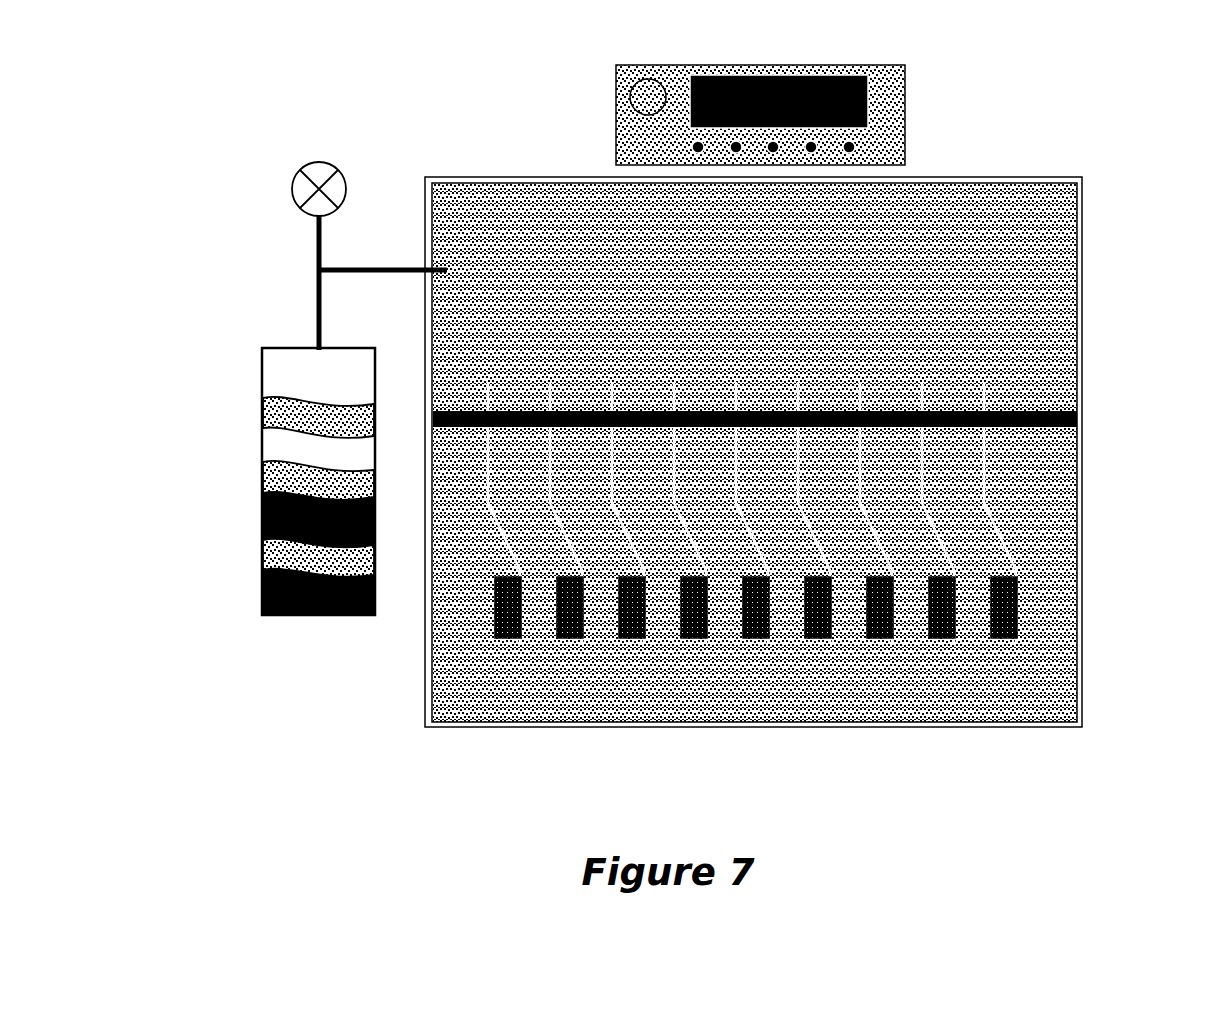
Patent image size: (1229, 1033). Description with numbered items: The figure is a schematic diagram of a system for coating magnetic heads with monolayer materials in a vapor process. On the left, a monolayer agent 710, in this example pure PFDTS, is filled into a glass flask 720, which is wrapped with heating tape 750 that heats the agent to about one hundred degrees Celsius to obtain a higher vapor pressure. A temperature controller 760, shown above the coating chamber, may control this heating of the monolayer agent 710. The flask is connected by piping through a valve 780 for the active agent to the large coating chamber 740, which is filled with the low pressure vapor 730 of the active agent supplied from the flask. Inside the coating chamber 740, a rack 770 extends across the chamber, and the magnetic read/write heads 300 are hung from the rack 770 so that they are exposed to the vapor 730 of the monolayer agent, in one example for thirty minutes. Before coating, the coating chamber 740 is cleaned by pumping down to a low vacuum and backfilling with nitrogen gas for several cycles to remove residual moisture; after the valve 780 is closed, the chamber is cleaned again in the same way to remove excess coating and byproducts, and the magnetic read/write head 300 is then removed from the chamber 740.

The magnetic read/write head 300 is at (1012, 606).
The monolayer agent 710 is at (332, 616).
The glass flask 720 is at (276, 344).
The low pressure vapor 730 is at (1022, 308).
The coating chamber 740 is at (1038, 182).
The heating tape 750 is at (273, 477).
The temperature controller 760 is at (704, 68).
The rack 770 is at (1028, 415).
The valve 780 is at (323, 182).